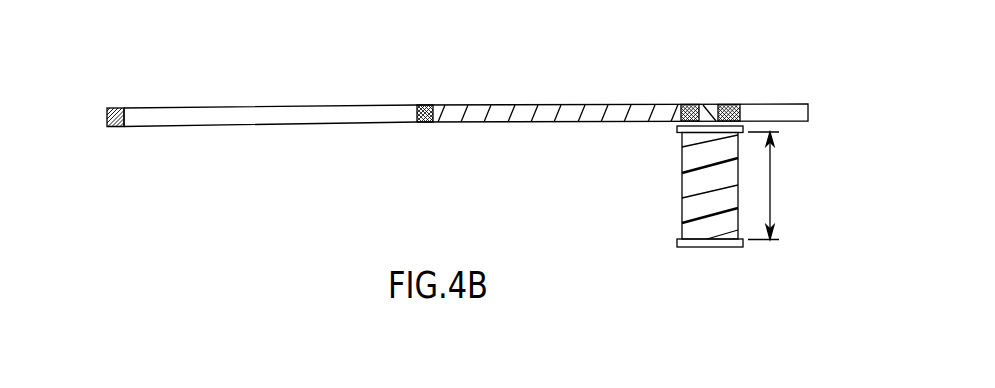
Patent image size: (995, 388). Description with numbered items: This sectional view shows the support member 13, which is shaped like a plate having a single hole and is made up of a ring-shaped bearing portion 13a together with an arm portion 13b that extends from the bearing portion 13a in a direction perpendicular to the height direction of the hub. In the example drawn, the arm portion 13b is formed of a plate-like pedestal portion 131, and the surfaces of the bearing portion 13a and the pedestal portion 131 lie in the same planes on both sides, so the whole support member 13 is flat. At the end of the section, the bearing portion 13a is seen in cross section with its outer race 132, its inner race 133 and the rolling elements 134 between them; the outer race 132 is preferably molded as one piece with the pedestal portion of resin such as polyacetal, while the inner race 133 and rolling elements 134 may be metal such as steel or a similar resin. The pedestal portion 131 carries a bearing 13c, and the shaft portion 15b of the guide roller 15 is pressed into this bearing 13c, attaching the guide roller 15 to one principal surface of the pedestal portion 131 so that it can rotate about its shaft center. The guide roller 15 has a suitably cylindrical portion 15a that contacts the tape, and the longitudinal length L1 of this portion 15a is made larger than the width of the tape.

The support member 13 is at (466, 67).
The bearing portion 13a is at (432, 107).
The arm portion 13b is at (558, 88).
The pedestal portion 131 is at (517, 112).
The bearing 13c is at (690, 105).
The outer race 132 is at (113, 108).
The inner race 133 is at (121, 108).
The rolling elements 134 is at (121, 127).
The guide roller 15 is at (650, 186).
The portion of the guide roller that contacts the tape 15a is at (688, 209).
The shaft portion 15b is at (703, 128).
The longitudinal length L1 is at (780, 183).